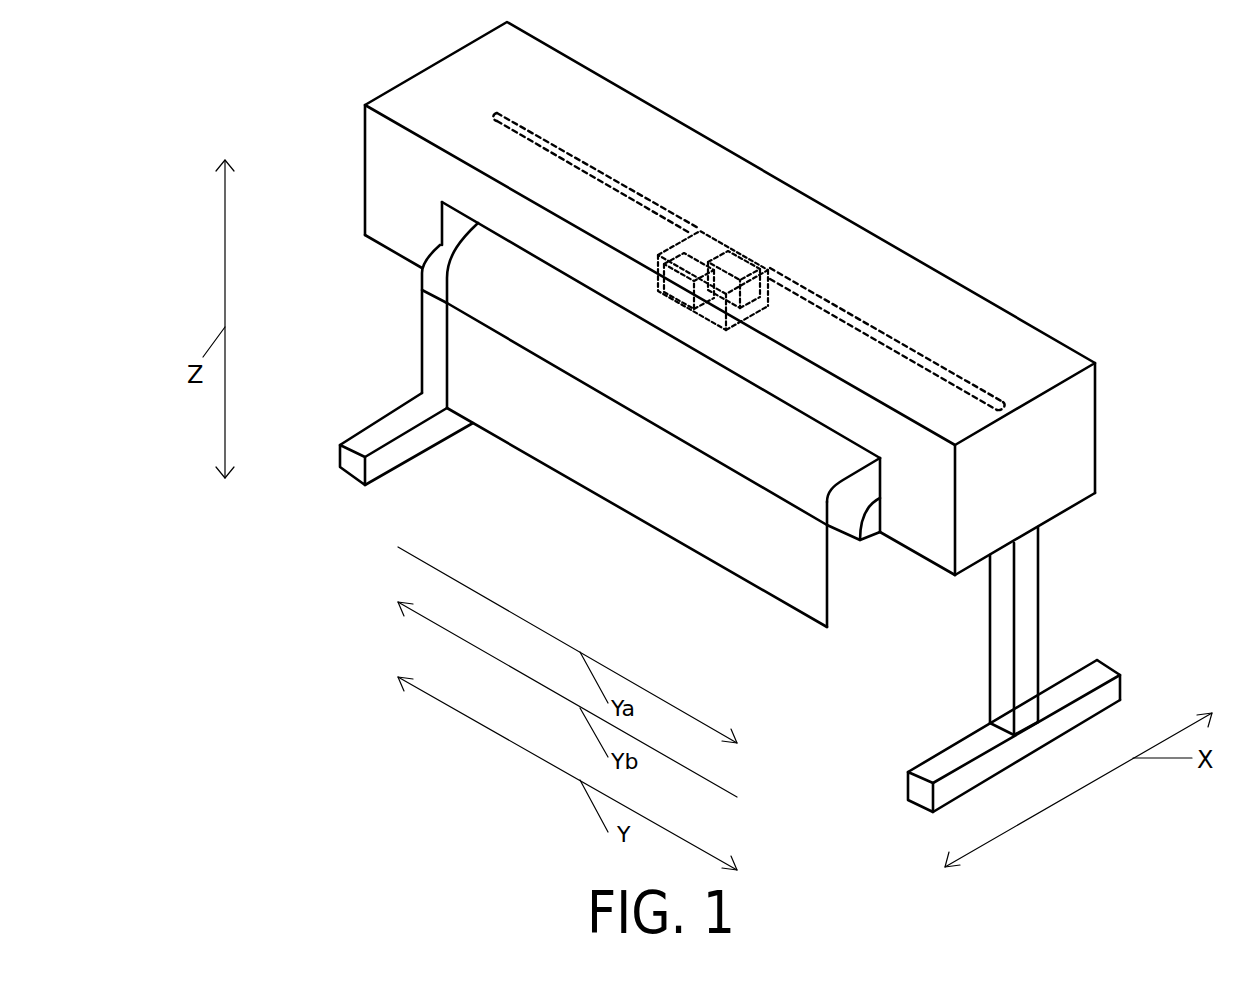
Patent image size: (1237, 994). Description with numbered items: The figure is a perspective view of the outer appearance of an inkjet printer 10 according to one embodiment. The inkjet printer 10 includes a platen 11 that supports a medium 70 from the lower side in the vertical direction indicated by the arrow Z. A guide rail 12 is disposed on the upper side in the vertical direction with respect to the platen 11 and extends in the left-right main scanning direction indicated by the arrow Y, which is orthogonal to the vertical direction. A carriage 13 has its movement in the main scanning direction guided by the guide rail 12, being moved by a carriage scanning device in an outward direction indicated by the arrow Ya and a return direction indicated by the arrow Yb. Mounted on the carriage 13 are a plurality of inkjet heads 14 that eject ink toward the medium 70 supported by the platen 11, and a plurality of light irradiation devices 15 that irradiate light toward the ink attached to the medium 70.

The inkjet printer 10 is at (962, 120).
The platen 11 is at (457, 250).
The guide rail 12 is at (593, 163).
The carriage 13 is at (765, 307).
The inkjet head 14 is at (722, 255).
The light irradiation device 15 is at (703, 235).
The medium 70 is at (785, 552).